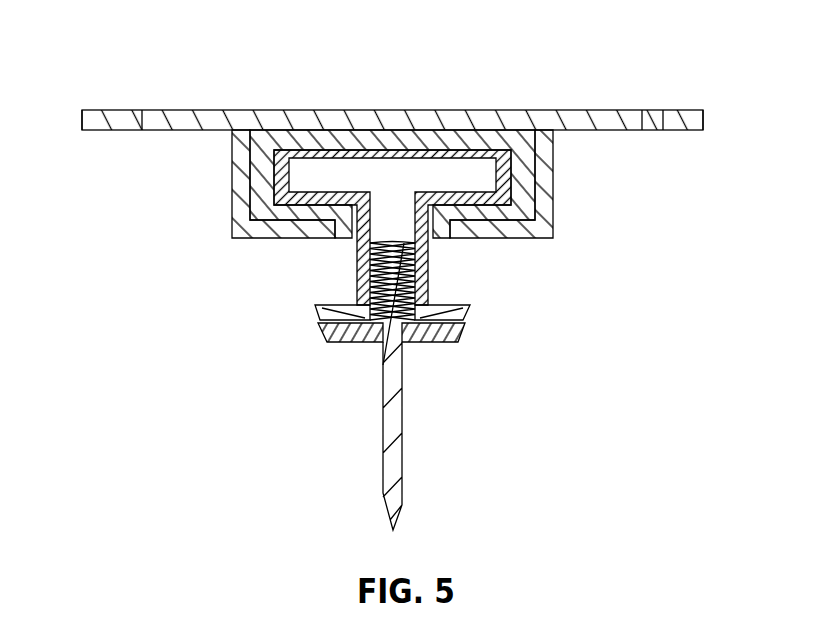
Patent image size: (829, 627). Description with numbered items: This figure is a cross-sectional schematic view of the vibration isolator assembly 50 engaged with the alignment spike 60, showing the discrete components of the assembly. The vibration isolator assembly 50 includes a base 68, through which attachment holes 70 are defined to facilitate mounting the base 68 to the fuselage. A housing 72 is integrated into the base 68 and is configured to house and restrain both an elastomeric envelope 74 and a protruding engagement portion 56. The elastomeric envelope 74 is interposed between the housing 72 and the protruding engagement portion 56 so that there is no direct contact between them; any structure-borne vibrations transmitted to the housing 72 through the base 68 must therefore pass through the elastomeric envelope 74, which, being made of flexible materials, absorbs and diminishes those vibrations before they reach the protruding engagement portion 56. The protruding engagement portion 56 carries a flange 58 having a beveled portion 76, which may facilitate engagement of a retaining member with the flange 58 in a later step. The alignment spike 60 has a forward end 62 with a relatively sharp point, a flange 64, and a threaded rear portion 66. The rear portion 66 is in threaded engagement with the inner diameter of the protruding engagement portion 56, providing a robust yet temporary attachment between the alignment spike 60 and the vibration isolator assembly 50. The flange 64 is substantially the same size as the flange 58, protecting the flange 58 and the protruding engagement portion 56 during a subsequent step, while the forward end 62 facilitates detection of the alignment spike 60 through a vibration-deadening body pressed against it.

The vibration isolator assembly 50 is at (138, 67).
The protruding engagement portion 56 is at (358, 273).
The flange 58 is at (447, 305).
The alignment spike 60 is at (316, 502).
The forward end 62 is at (403, 500).
The flange 64 is at (337, 343).
The rear portion 66 is at (392, 243).
The base 68 is at (223, 110).
The attachment holes 70 is at (135, 131).
The housing 72 is at (232, 176).
The elastomeric envelope 74 is at (340, 238).
The beveled portion 76 is at (467, 313).